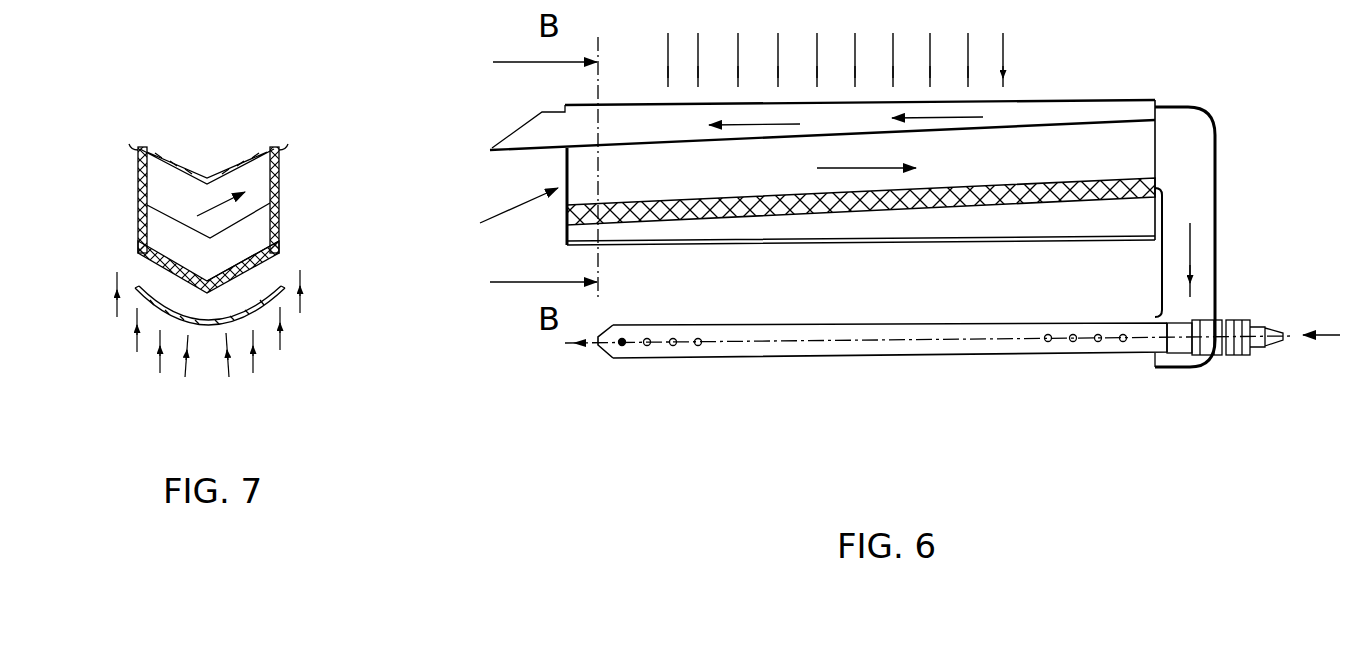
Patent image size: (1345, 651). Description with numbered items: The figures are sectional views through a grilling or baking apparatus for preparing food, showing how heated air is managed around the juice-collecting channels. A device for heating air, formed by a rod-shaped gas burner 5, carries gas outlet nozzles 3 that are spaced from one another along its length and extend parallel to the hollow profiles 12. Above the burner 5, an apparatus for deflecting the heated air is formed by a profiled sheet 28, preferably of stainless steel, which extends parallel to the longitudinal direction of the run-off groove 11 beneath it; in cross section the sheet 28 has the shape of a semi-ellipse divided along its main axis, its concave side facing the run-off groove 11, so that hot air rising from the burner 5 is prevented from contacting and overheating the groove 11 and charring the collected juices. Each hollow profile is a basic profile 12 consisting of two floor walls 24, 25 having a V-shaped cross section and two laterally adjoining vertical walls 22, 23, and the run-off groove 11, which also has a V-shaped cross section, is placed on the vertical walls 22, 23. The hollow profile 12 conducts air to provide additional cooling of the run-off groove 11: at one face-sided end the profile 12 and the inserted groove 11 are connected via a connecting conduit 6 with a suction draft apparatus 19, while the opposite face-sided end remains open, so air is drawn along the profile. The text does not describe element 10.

In FIG. 6, the gas outlet nozzles 3 is at (698, 350).
In FIG. 6, the rod-shaped gas burner 5 is at (773, 350).
In FIG. 6, the connecting conduit 6 is at (1205, 220).
In FIG. 6, the gas supply connection 10 is at (1253, 333).
In FIG. 7, the run-off groove 11 is at (207, 173).
In FIG. 6, the run-off groove 11 is at (1037, 117).
In FIG. 7, the hollow profile 12 is at (299, 132).
In FIG. 6, the hollow profile 12 is at (915, 203).
In FIG. 6, the suction draft apparatus 19 is at (1177, 347).
In FIG. 7, the vertical wall 22 is at (140, 173).
In FIG. 7, the vertical wall 23 is at (278, 192).
In FIG. 7, the floor wall 24 is at (150, 250).
In FIG. 7, the floor wall 25 is at (277, 250).
In FIG. 7, the profiled sheet 28 is at (283, 298).
In FIG. 6, the profiled sheet 28 is at (757, 243).